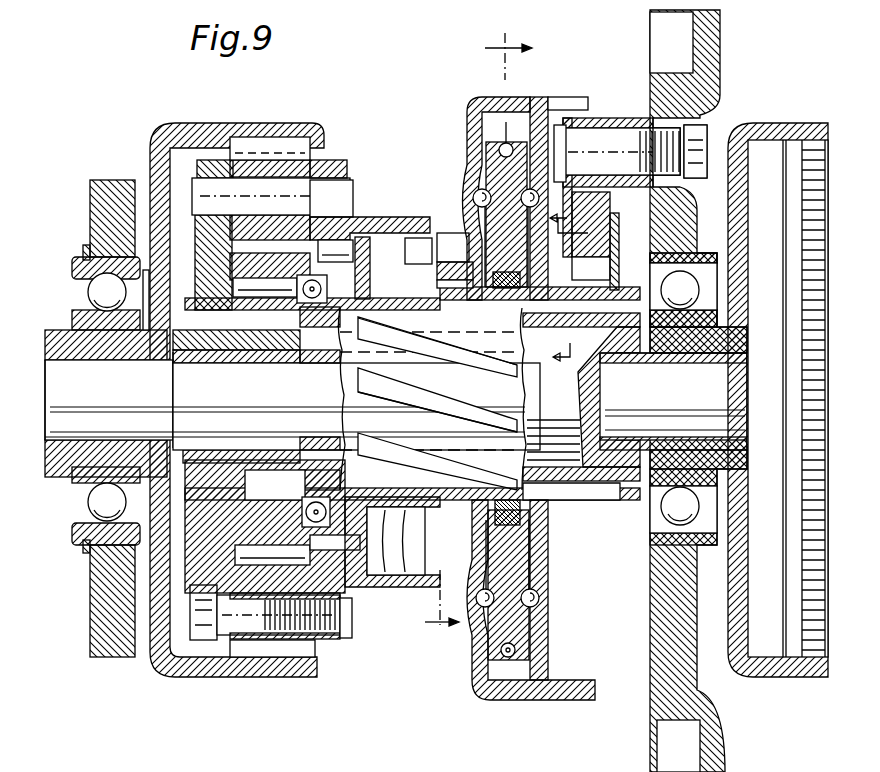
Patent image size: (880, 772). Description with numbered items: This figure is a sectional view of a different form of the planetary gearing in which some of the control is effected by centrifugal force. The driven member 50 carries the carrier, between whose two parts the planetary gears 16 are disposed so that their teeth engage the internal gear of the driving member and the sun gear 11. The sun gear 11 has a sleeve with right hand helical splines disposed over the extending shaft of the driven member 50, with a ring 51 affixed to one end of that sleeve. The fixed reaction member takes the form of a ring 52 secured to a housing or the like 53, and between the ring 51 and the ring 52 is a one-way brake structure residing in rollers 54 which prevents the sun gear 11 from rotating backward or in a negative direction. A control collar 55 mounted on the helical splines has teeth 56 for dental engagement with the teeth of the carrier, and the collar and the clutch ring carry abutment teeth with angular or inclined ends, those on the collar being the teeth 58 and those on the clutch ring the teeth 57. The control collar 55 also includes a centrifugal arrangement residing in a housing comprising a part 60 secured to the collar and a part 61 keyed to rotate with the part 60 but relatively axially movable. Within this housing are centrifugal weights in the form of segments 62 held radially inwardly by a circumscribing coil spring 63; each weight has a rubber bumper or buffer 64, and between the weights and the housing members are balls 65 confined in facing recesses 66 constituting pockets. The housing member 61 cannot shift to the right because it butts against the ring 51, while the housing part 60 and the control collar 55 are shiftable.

The planetary gears 16 is at (569, 289).
The driven member 50 is at (770, 125).
The ring 51 is at (650, 290).
The fixed reaction ring 52 is at (612, 205).
The housing 53 is at (652, 100).
The one-way brake rollers 54 is at (616, 240).
The control collar 55 is at (445, 240).
The teeth 56 is at (462, 265).
The abutment teeth of clutch ring 57 is at (383, 560).
The abutment teeth of control collar 58 is at (395, 580).
The housing part 60 is at (470, 120).
The housing member 61 is at (538, 97).
The centrifugal weights 62 is at (495, 625).
The coil spring 63 is at (508, 658).
The bumper 64 is at (490, 540).
The balls 65 is at (478, 195).
The recesses 66 is at (540, 608).
The sun gear 11 is at (270, 165).